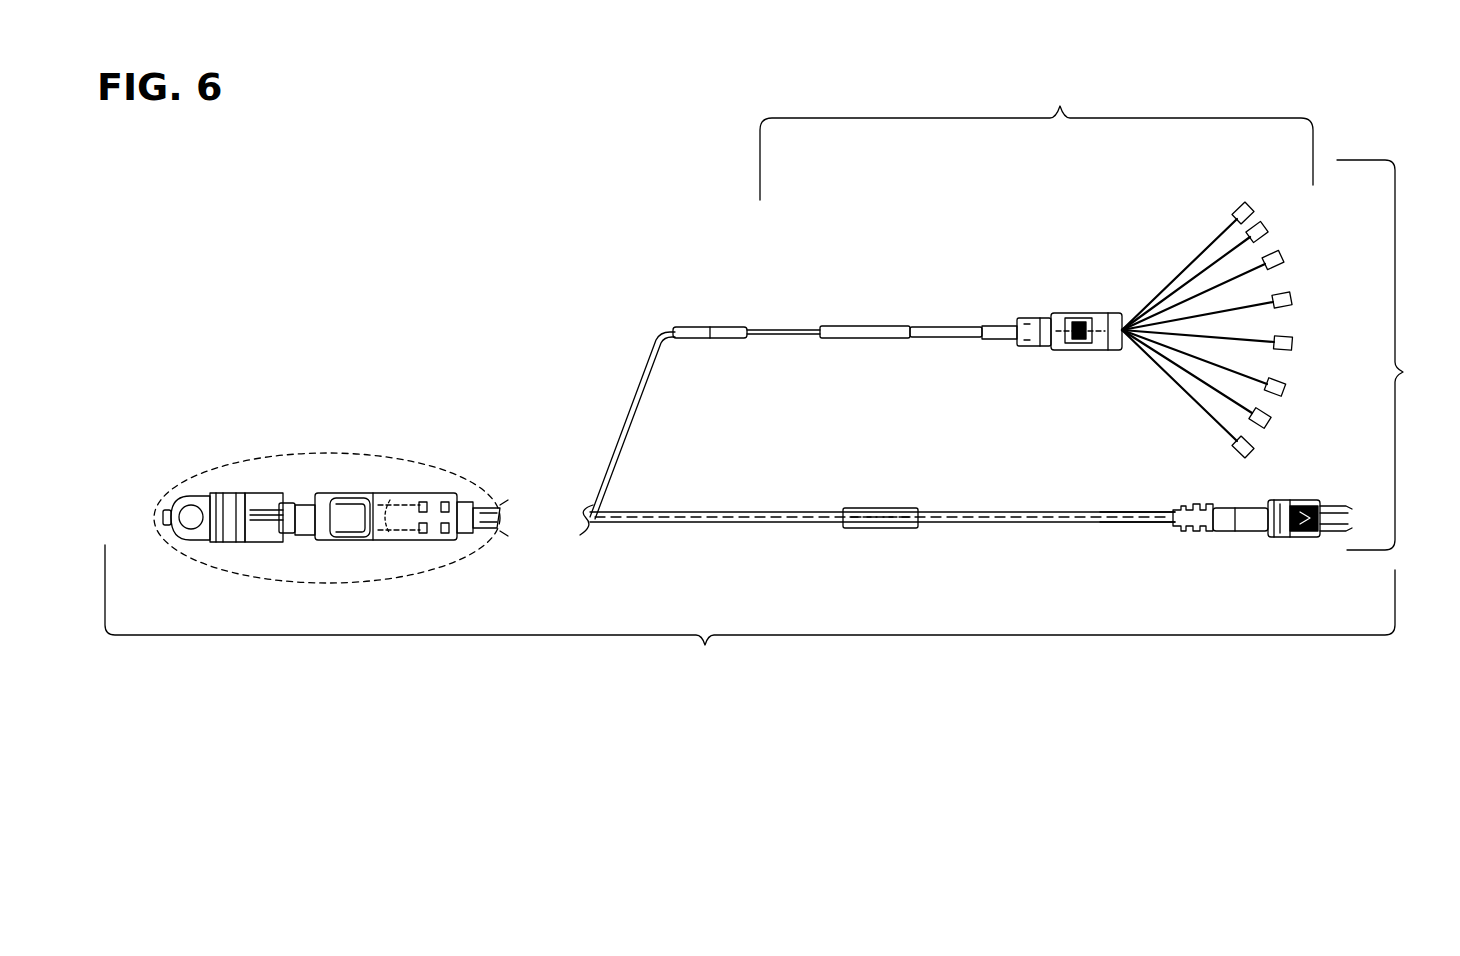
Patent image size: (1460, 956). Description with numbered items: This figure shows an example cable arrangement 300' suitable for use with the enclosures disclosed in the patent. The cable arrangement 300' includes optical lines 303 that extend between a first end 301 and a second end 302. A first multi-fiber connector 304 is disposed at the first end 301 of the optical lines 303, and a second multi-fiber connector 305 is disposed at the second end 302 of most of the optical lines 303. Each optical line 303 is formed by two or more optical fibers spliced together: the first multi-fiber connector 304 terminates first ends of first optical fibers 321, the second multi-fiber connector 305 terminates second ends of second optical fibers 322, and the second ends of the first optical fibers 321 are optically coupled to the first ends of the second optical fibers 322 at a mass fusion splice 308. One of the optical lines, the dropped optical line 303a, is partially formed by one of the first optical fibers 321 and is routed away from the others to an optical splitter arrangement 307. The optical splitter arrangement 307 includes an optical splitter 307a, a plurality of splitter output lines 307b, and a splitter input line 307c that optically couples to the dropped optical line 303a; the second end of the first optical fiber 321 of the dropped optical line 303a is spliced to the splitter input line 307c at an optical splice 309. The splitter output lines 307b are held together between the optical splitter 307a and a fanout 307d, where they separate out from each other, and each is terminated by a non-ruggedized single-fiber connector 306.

The cable arrangement 300' is at (750, 615).
The first end 301 is at (138, 469).
The second end 302 is at (1396, 355).
The optical line 303 is at (666, 512).
The dropped optical line 303a is at (615, 438).
The first multi-fiber connector 304 is at (362, 495).
The second multi-fiber connector 305 is at (1297, 538).
The single-fiber connector 306 is at (1246, 206).
The optical splitter arrangement 307 is at (1036, 139).
The optical splitter 307a is at (878, 326).
The splitter output lines 307b is at (1173, 267).
The splitter input line 307c is at (778, 330).
The fanout 307d is at (1052, 350).
The mass fusion splice 308 is at (897, 528).
The optical splice 309 is at (733, 325).
The first optical fibers 321 is at (605, 470).
The second optical fibers 322 is at (1123, 522).